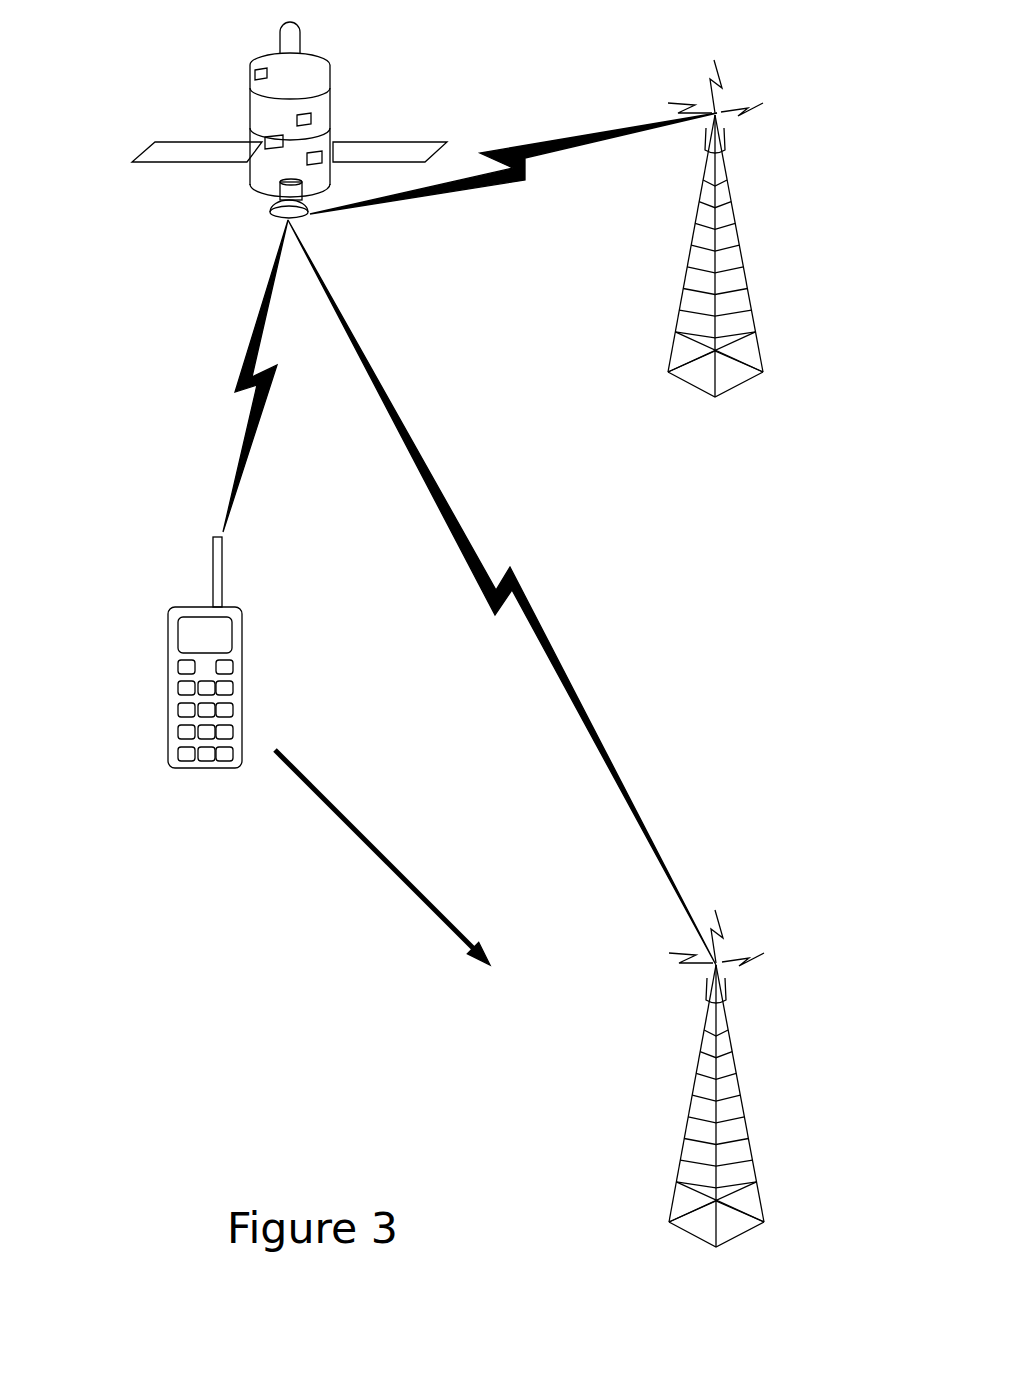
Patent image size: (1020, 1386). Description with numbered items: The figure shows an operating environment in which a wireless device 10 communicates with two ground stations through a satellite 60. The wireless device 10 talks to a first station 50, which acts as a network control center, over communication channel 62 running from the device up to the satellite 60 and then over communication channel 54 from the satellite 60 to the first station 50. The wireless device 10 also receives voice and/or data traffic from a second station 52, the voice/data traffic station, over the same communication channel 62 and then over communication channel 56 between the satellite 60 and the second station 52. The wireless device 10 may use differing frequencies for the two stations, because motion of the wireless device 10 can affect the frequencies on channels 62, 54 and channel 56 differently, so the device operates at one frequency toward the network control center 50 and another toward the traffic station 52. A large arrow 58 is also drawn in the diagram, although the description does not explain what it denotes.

The wireless device 10 is at (167, 642).
The first station 50 is at (776, 177).
The second station 52 is at (777, 1062).
The communication channel 54 is at (522, 145).
The communication channel 56 is at (530, 602).
The direction of communication flow arrow 58 is at (380, 860).
The satellite 60 is at (214, 68).
The communication channel 62 is at (238, 377).